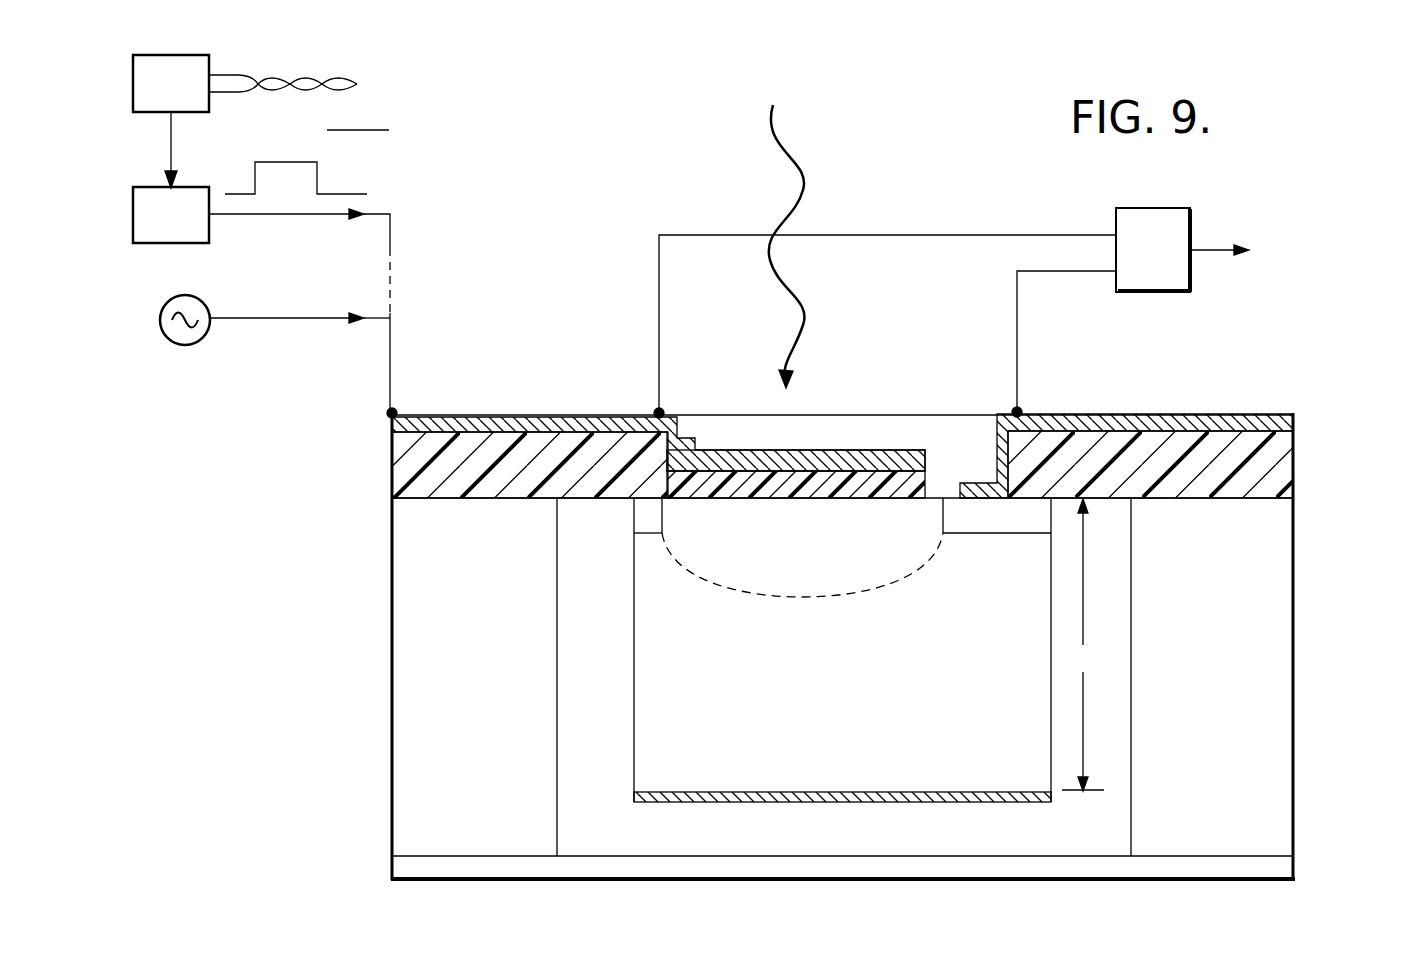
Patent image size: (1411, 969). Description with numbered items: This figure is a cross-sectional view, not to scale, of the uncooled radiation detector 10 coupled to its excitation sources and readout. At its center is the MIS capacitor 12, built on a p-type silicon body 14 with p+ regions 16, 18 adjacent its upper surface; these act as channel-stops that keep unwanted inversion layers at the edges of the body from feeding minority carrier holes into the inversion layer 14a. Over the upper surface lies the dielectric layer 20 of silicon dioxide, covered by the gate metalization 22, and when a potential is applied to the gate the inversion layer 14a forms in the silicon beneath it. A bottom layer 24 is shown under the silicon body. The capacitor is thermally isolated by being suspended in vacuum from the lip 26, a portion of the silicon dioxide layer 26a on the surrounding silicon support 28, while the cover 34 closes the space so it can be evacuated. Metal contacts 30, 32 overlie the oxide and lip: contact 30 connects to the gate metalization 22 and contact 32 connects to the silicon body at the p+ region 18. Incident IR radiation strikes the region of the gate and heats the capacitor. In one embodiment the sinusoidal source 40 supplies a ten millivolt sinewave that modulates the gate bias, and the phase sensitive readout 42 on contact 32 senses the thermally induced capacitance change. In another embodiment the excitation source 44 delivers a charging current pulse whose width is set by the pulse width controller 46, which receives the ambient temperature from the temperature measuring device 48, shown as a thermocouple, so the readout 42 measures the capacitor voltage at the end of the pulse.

The uncooled radiation detector 10 is at (1348, 371).
The Metal-Insulator-Semiconductor (MIS) capacitor 12 is at (624, 816).
The p-type silicon body 14 is at (634, 707).
The inversion layer 14a is at (820, 546).
The p+ region 16 is at (634, 515).
The p+ region 18 is at (1022, 535).
The dielectric layer 20 is at (925, 479).
The gate metalization 22 is at (793, 451).
The bottom electrode 24 is at (937, 804).
The lip 26 is at (566, 499).
The silicon dioxide layer 26a is at (392, 463).
The silicon support 28 is at (391, 612).
The metal contact 30 is at (441, 417).
The metal contact 32 is at (1185, 414).
The cover 34 is at (1170, 881).
The sinusoidal source 40 is at (167, 340).
The phase sensitive readout 42 is at (1192, 210).
The excitation source 44 is at (133, 245).
The pulse width controller 46 is at (133, 111).
The temperature measuring device 48 is at (345, 85).